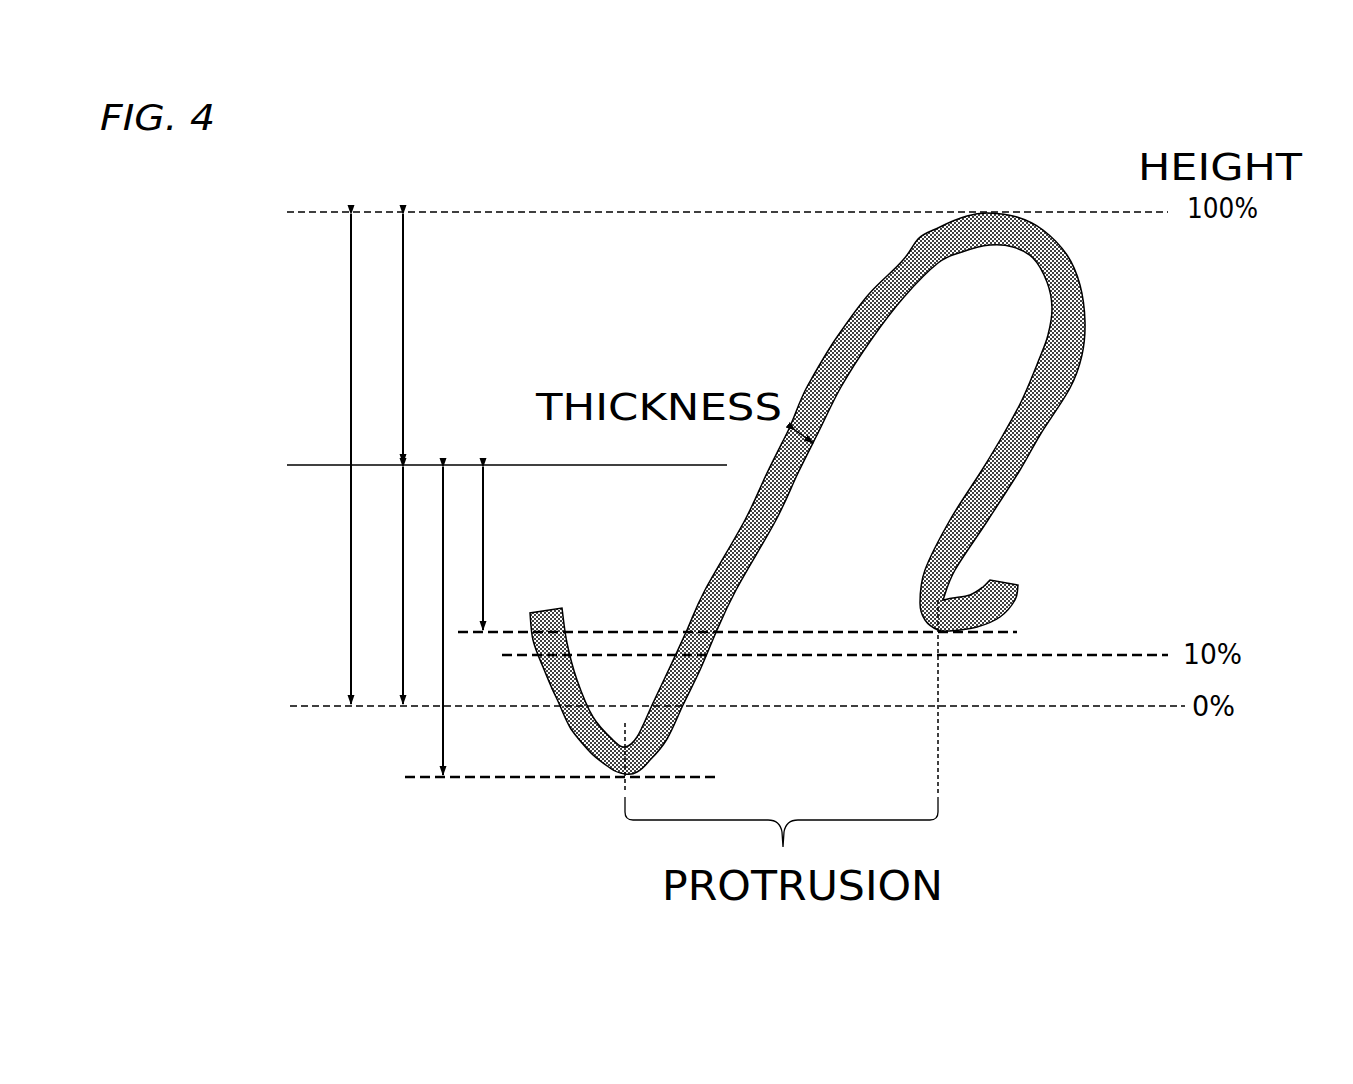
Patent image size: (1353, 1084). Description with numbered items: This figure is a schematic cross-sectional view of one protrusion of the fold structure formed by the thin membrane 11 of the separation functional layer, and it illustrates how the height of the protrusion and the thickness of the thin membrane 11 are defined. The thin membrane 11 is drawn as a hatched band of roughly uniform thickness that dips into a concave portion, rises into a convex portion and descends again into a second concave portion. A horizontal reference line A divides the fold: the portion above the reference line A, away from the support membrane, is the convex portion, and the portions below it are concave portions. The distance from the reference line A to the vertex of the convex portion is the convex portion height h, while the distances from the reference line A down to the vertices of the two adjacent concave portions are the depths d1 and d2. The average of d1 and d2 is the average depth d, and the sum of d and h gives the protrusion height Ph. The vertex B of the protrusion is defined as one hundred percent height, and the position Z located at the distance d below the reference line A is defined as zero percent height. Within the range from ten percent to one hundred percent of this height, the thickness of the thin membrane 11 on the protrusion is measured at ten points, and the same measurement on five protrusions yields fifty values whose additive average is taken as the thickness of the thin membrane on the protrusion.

The thin membrane 11 is at (985, 183).
The vertex of the protrusion B is at (716, 211).
The reference line A is at (495, 466).
The 0% height position Z is at (727, 704).
The protrusion height Ph is at (323, 459).
The convex portion height h is at (390, 338).
The average depth d is at (390, 585).
The depth of first concave portion d1 is at (561, 622).
The depth of second concave portion d2 is at (733, 549).